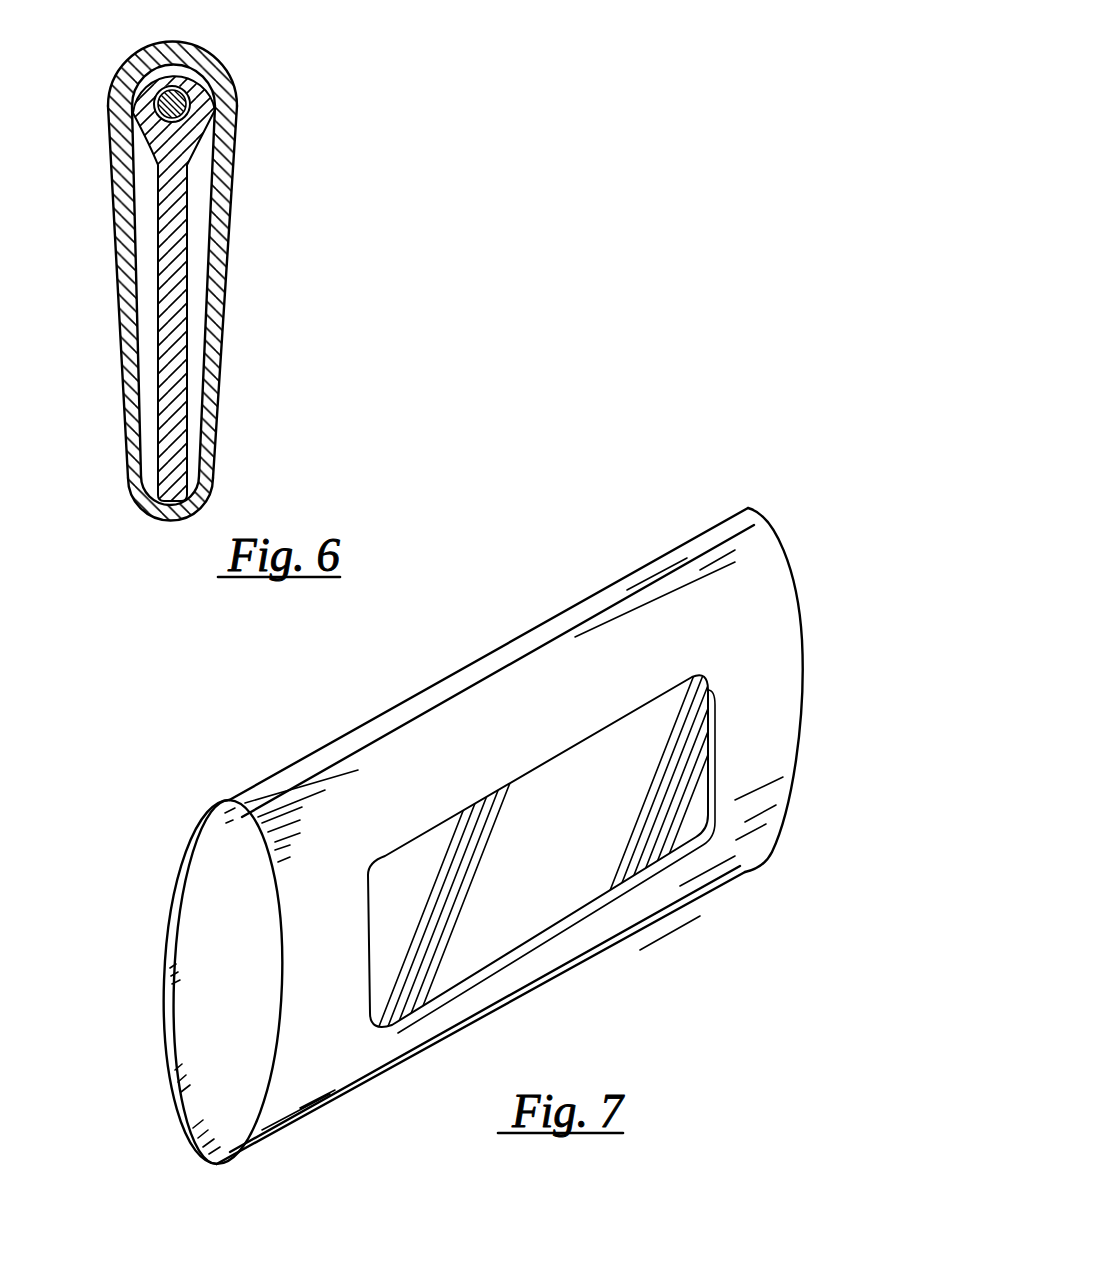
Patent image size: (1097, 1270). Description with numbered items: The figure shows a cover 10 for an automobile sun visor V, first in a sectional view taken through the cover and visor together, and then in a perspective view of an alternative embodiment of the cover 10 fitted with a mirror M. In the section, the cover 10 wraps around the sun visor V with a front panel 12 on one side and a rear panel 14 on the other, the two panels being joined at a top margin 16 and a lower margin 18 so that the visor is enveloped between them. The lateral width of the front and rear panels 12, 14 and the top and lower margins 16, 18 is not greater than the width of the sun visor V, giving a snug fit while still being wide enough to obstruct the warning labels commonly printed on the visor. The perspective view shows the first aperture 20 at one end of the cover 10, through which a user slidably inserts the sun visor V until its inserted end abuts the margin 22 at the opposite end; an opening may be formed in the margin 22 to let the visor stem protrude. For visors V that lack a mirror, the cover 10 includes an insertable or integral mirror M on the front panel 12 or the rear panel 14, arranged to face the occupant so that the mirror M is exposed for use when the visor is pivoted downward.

In FIG. 6, the cover 10 is at (286, 137).
In FIG. 7, the cover 10 is at (745, 484).
In FIG. 6, the front panel 12 is at (226, 248).
In FIG. 6, the rear panel 14 is at (116, 252).
In FIG. 6, the top margin 16 is at (193, 43).
In FIG. 6, the lower margin 18 is at (178, 522).
In FIG. 7, the first aperture 20 is at (226, 980).
In FIG. 7, the margin 22 is at (803, 675).
In FIG. 6, the sun visor V is at (174, 323).
In FIG. 7, the mirror M is at (633, 874).